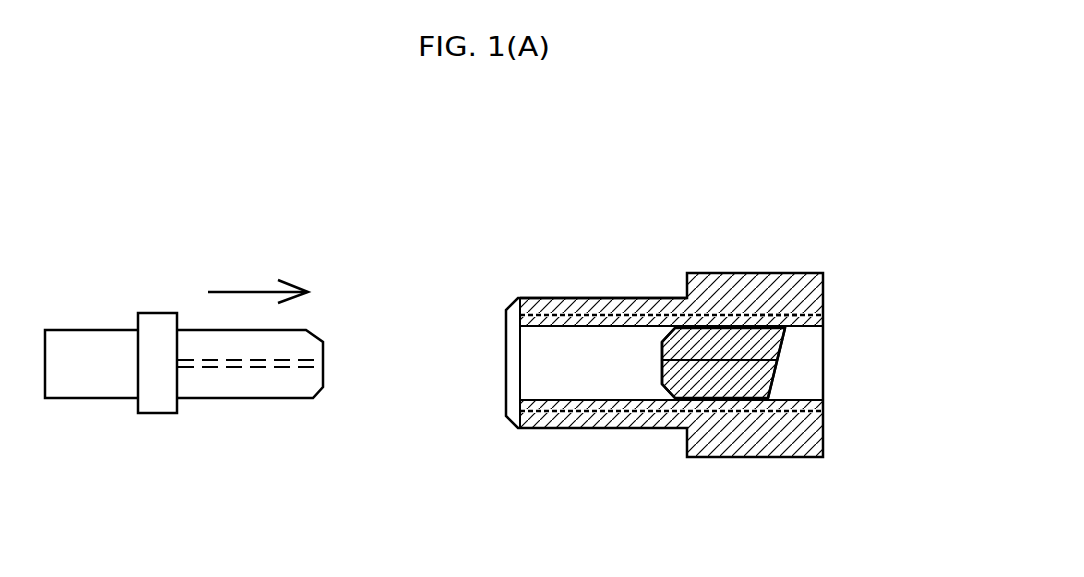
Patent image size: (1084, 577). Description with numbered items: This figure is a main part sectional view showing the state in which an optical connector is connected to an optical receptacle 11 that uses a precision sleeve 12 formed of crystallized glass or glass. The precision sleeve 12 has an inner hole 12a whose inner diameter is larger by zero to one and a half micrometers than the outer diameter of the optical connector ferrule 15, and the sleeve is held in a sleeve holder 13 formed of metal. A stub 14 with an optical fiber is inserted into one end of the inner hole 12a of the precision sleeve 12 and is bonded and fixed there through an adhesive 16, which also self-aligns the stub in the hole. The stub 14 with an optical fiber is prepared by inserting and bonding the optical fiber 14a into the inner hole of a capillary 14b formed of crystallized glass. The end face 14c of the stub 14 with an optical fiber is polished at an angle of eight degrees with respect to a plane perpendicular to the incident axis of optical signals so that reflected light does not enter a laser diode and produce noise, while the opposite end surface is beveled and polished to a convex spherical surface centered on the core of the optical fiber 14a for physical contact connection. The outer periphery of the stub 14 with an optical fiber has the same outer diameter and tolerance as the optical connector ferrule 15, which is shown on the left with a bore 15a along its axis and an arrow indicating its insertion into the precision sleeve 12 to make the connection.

The optical receptacle 11 is at (633, 245).
The precision sleeve 12 is at (613, 430).
The inner hole 12a is at (567, 325).
The sleeve holder 13 is at (585, 297).
The stub with an optical fiber 14 is at (765, 343).
The optical fiber 14a is at (776, 362).
The capillary 14b is at (664, 366).
The end face 14c is at (772, 378).
The optical connector ferrule 15 is at (202, 331).
The center bore of pin terminal 15a is at (232, 367).
The adhesive 16 is at (769, 323).